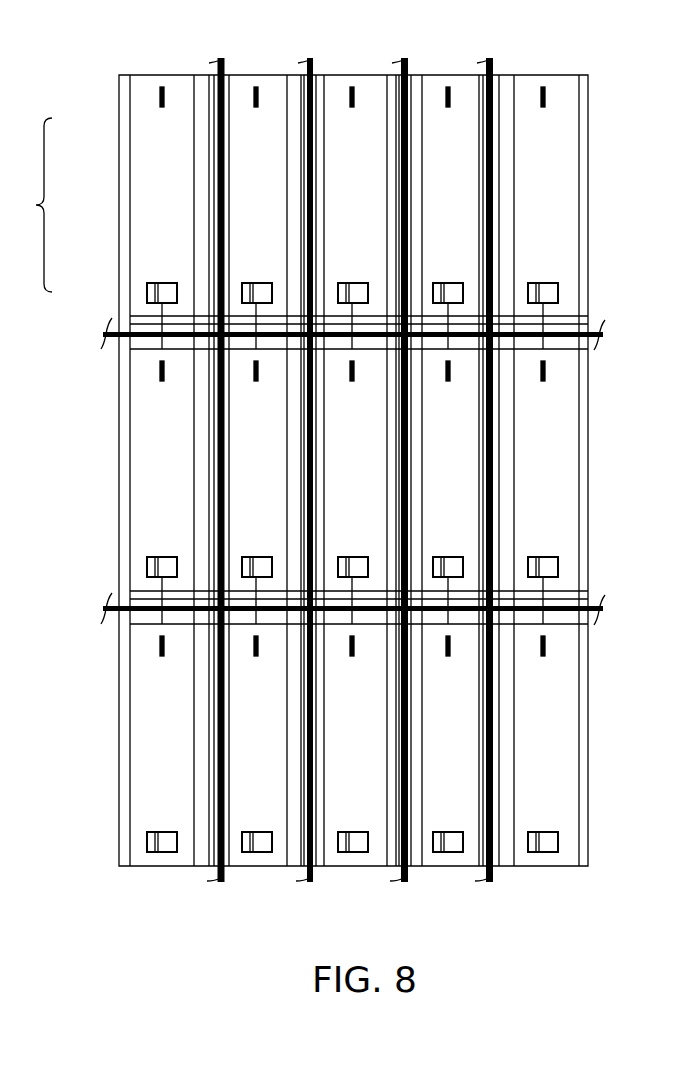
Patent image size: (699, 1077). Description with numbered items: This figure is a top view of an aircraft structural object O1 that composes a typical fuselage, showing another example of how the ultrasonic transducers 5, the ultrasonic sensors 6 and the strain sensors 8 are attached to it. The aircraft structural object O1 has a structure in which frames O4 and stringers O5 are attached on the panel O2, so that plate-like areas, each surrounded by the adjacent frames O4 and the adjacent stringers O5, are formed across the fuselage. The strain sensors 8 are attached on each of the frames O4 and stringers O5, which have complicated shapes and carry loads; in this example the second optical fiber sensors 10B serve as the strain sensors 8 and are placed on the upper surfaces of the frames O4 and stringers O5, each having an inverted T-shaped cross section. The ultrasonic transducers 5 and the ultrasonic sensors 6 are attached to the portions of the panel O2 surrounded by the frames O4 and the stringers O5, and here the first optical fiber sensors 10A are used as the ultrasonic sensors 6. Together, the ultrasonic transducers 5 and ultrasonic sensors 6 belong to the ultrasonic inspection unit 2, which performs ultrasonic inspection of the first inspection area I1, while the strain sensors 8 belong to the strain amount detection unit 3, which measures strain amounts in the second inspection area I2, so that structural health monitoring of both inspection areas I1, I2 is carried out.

The aircraft structural object O1 is at (573, 68).
The panel O2 is at (570, 158).
The frames O4 is at (540, 326).
The stringers O5 is at (494, 88).
The ultrasonic inspection unit 2 is at (94, 206).
The strain amount detection unit 3 is at (113, 612).
The ultrasonic transducers 5 is at (165, 297).
The ultrasonic sensors 6 is at (101, 206).
The strain sensors 8 is at (215, 63).
The first optical fiber sensors 10A is at (160, 90).
The second optical fiber sensors 10B is at (303, 63).
The first inspection area I1 is at (155, 757).
The second inspection area I2 is at (220, 490).